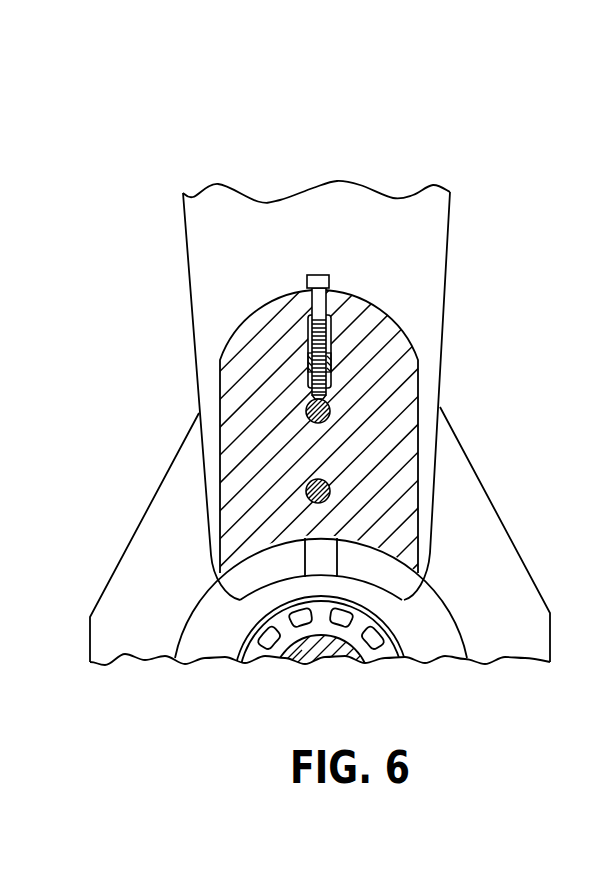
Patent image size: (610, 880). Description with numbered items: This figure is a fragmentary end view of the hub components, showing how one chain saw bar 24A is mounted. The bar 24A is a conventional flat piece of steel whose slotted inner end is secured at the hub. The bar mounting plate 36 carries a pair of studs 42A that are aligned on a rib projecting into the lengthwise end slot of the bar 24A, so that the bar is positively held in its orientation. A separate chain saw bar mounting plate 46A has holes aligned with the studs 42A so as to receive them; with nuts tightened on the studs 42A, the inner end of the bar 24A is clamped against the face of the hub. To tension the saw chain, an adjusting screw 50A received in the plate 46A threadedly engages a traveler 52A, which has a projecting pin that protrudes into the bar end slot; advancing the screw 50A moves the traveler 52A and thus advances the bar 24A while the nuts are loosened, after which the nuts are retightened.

The chain saw bar 24A is at (433, 272).
The bar mounting plate 36 is at (503, 557).
The studs 42A is at (306, 491).
The chain saw bar mounting plate 46A is at (405, 444).
The adjusting screw 50A is at (307, 281).
The traveler 52A is at (310, 365).